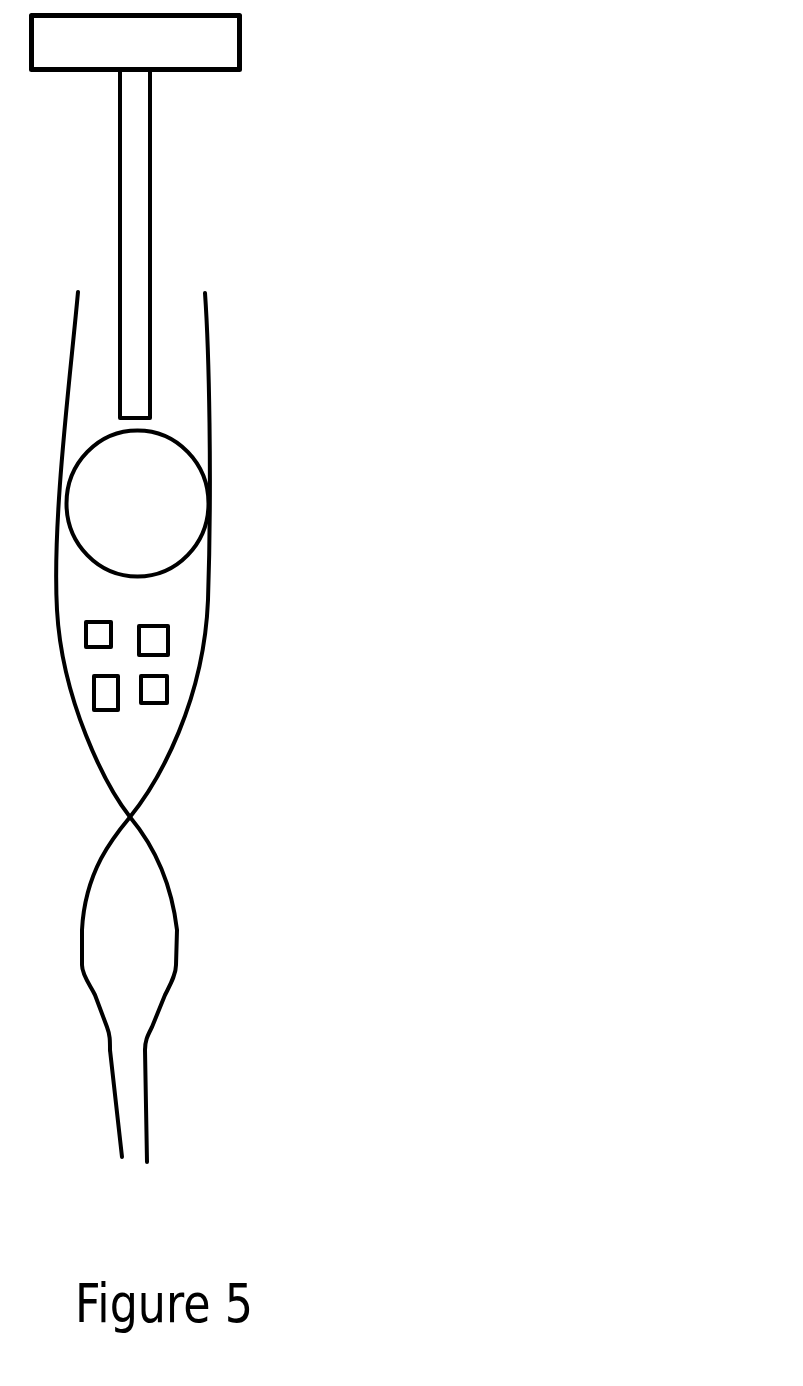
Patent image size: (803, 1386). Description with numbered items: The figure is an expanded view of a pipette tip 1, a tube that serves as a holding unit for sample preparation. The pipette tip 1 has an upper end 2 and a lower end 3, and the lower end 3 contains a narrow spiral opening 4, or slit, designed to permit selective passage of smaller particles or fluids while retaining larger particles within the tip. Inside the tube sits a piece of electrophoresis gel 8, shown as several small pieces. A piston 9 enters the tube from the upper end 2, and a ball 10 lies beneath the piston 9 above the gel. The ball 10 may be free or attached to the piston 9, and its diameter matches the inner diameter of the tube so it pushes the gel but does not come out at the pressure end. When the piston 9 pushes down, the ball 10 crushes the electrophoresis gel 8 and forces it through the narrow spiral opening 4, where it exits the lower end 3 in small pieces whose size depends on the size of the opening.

The pipette tip 1 is at (216, 574).
The upper end 2 is at (180, 295).
The lower end 3 is at (147, 1161).
The spiral opening 4 is at (150, 826).
The electrophoresis gel 8 is at (155, 688).
The piston 9 is at (154, 208).
The ball 10 is at (200, 469).